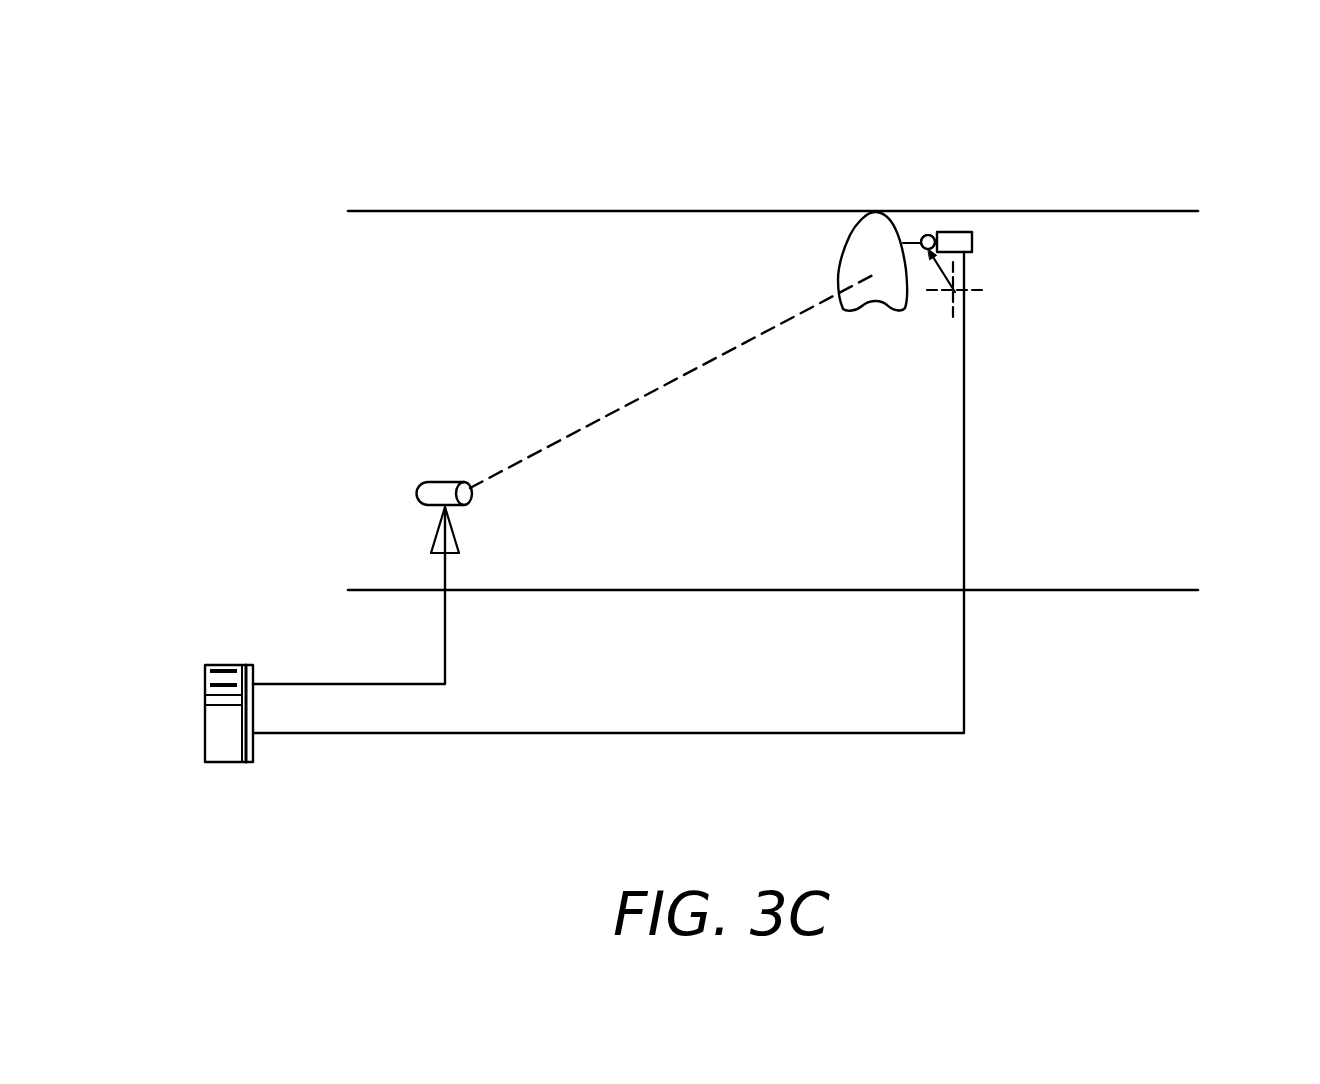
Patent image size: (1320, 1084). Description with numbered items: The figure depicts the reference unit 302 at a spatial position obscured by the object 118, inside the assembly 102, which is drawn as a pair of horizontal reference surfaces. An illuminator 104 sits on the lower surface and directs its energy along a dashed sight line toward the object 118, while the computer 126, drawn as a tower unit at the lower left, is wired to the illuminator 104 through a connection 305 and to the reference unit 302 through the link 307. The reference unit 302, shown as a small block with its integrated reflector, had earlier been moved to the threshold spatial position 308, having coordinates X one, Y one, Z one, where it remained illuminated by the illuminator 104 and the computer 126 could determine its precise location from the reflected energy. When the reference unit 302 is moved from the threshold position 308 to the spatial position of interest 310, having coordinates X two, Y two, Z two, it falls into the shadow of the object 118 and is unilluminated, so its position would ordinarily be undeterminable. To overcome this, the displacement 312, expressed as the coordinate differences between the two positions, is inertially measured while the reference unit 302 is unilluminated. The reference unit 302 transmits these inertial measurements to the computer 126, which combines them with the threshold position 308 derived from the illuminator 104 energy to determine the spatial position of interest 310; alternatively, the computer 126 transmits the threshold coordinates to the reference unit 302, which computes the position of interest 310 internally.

The assembly 102 is at (620, 211).
The illuminator 104 is at (442, 482).
The object 118 is at (877, 241).
The computer 126 is at (230, 665).
The reference unit 302 is at (972, 243).
The camera cable 305 is at (445, 655).
The link 307 is at (963, 667).
The threshold spatial position 308 is at (962, 292).
The spatial position of interest 310 is at (928, 233).
The displacement 312 is at (942, 270).